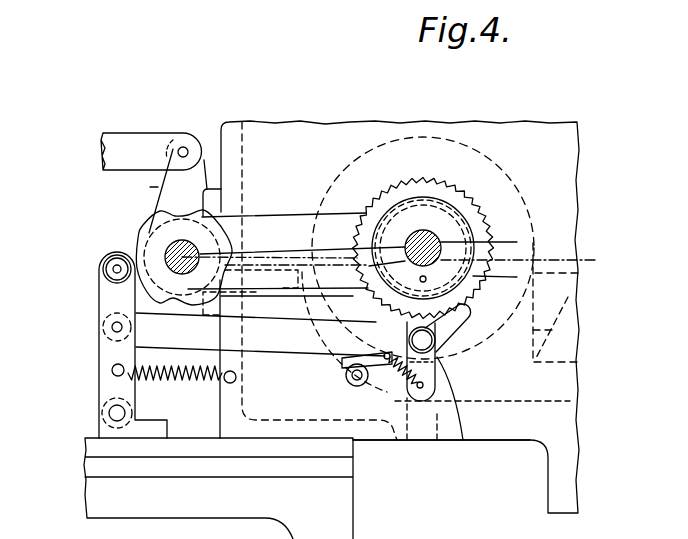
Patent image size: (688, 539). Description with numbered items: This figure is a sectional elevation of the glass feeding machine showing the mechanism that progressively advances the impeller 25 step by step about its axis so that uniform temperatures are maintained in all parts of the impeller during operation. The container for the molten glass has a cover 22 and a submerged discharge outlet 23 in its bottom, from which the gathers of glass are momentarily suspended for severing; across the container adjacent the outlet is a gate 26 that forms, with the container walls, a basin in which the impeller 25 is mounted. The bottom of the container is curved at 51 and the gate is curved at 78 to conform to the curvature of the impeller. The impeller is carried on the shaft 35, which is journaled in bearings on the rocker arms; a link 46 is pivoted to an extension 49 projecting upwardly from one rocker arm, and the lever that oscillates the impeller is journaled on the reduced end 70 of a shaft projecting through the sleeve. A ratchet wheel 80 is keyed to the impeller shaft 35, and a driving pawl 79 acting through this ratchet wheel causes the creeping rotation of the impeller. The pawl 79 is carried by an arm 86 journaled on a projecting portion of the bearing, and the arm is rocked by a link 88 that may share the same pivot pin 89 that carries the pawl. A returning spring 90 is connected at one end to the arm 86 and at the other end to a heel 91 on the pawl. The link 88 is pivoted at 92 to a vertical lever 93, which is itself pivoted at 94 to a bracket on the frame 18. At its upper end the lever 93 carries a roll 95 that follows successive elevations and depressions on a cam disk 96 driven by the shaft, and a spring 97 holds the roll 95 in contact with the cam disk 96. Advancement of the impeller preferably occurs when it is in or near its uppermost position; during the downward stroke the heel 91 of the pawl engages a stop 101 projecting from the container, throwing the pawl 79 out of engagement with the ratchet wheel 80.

The frame 18 is at (82, 444).
The cover 22 is at (224, 124).
The submerged discharge outlet 23 is at (422, 433).
The impeller 25 is at (448, 135).
The gate 26 is at (568, 322).
The shaft 35 is at (430, 237).
The link 46 is at (118, 140).
The extension 49 is at (150, 187).
The curved bottom of the container 51 is at (330, 355).
The reduced end of shaft 70 is at (168, 246).
The curved portion of the gate 78 is at (553, 330).
The driving pawl 79 is at (463, 322).
The ratchet wheel 80 is at (484, 212).
The arm 86 is at (463, 443).
The link 88 is at (215, 340).
The pivot pin 89 is at (432, 350).
The returning spring 90 is at (403, 366).
The heel 91 is at (385, 353).
The pivot 92 is at (113, 330).
The vertical lever 93 is at (107, 385).
The pivot 94 is at (126, 413).
The roll 95 is at (104, 266).
The cam disk 96 is at (152, 228).
The spring 97 is at (197, 381).
The stop 101 is at (355, 378).